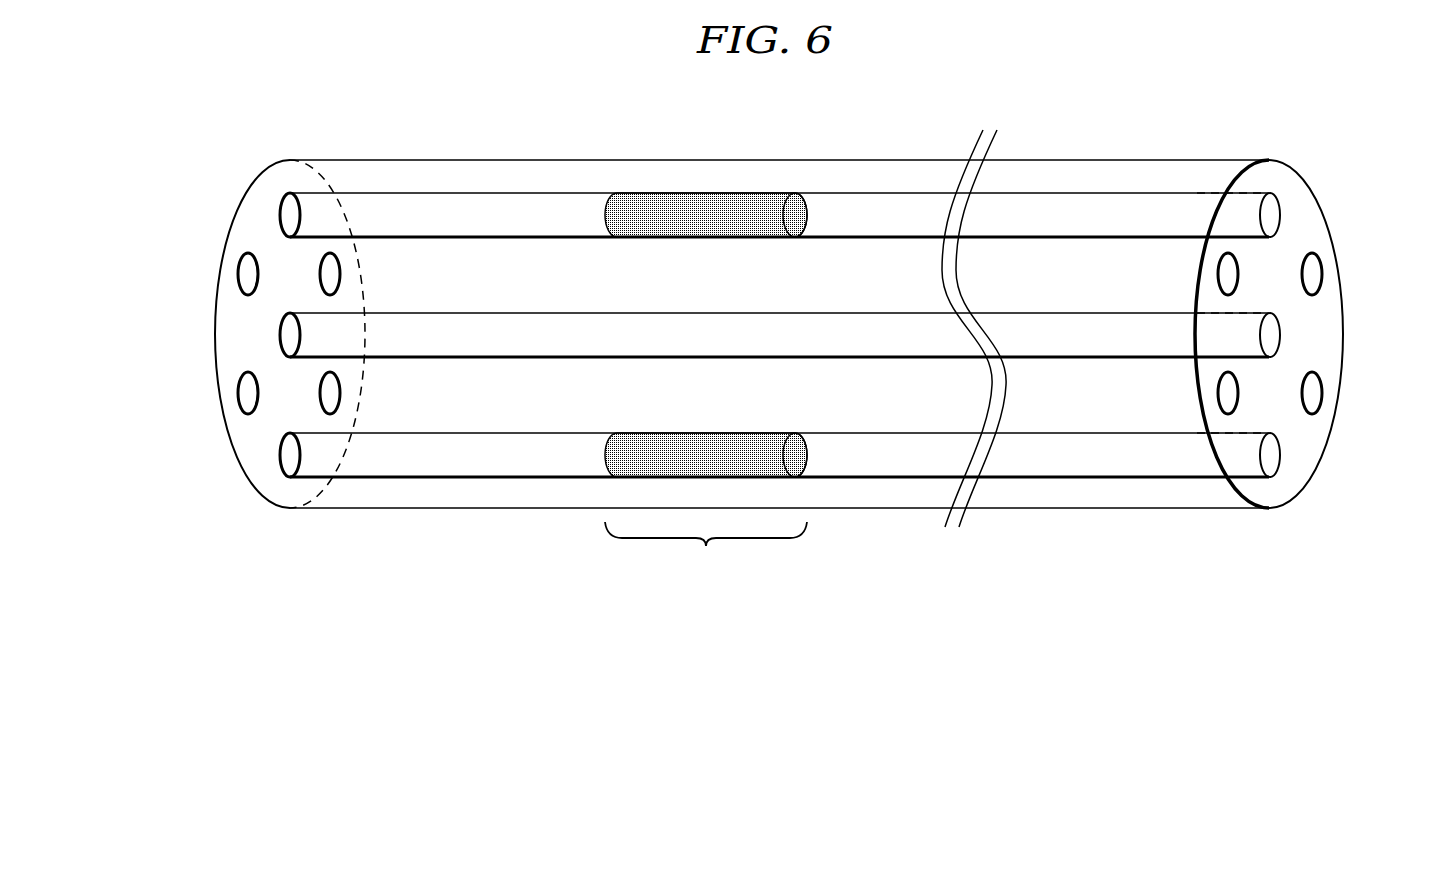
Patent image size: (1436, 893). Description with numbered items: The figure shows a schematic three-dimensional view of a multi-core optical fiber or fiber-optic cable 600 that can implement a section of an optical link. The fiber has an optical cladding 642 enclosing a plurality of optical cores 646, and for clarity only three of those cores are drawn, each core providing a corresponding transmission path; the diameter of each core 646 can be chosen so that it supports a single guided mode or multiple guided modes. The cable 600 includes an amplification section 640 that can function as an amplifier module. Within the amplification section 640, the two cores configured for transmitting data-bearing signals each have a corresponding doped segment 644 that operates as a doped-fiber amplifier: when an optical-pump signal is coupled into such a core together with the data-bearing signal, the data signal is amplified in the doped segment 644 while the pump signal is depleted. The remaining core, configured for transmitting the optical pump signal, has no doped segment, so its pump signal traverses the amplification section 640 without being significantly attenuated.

The multi-core optical fiber or fiber-optic cable 600 is at (785, 107).
The amplification section 640 is at (706, 551).
The optical cladding 642 is at (260, 448).
The doped segment 644 is at (692, 438).
The optical core 646 is at (248, 274).